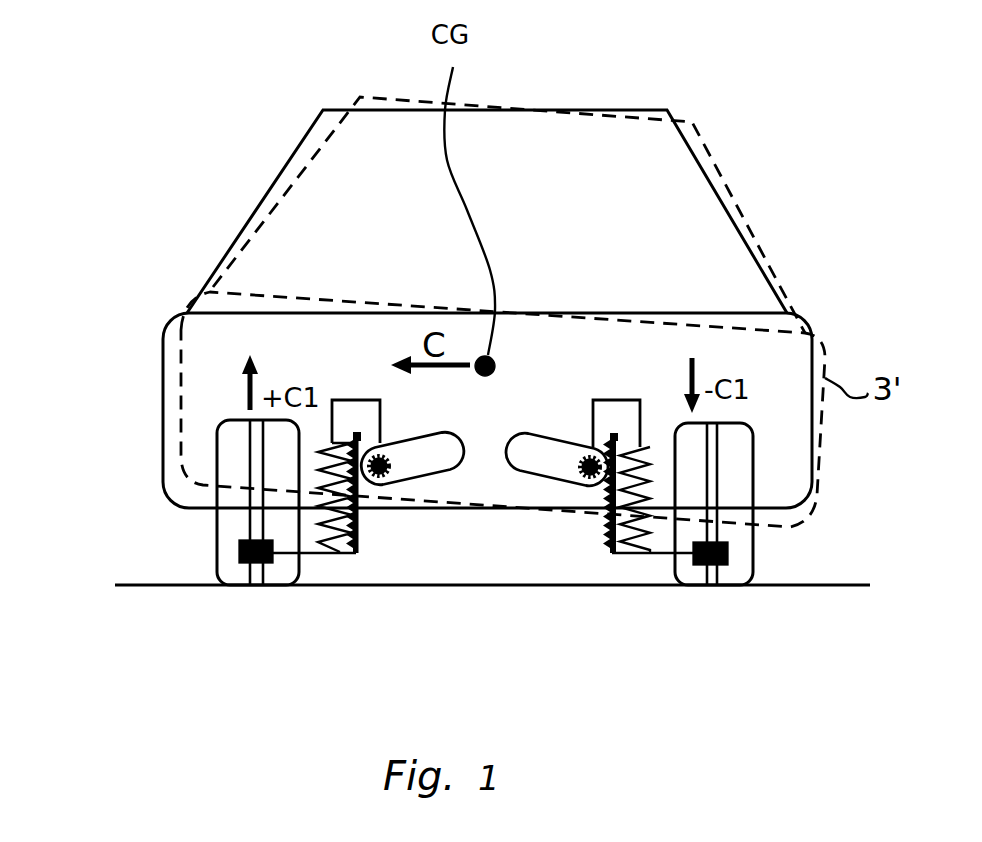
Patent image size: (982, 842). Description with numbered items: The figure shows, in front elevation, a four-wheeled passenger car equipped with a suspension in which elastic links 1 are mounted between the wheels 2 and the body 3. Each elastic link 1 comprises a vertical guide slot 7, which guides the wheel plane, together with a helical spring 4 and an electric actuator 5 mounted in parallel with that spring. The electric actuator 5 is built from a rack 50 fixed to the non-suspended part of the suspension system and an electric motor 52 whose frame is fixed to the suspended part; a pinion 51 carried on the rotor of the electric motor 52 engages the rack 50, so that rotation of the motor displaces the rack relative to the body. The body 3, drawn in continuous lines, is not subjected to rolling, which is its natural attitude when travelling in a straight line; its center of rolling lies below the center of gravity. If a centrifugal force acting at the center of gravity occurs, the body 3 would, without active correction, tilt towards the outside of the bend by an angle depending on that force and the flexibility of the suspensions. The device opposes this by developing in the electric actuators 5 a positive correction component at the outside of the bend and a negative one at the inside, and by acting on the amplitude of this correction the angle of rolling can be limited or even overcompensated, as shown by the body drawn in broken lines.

The elastic link 1 is at (290, 606).
The wheel 2 is at (216, 587).
The body 3 is at (197, 343).
The helical spring 4 is at (320, 553).
The electric actuator 5 is at (367, 566).
The vertical guide slot 7 is at (255, 588).
The rack 50 is at (367, 533).
The pinion 51 is at (378, 462).
The electric motor 52 is at (398, 445).